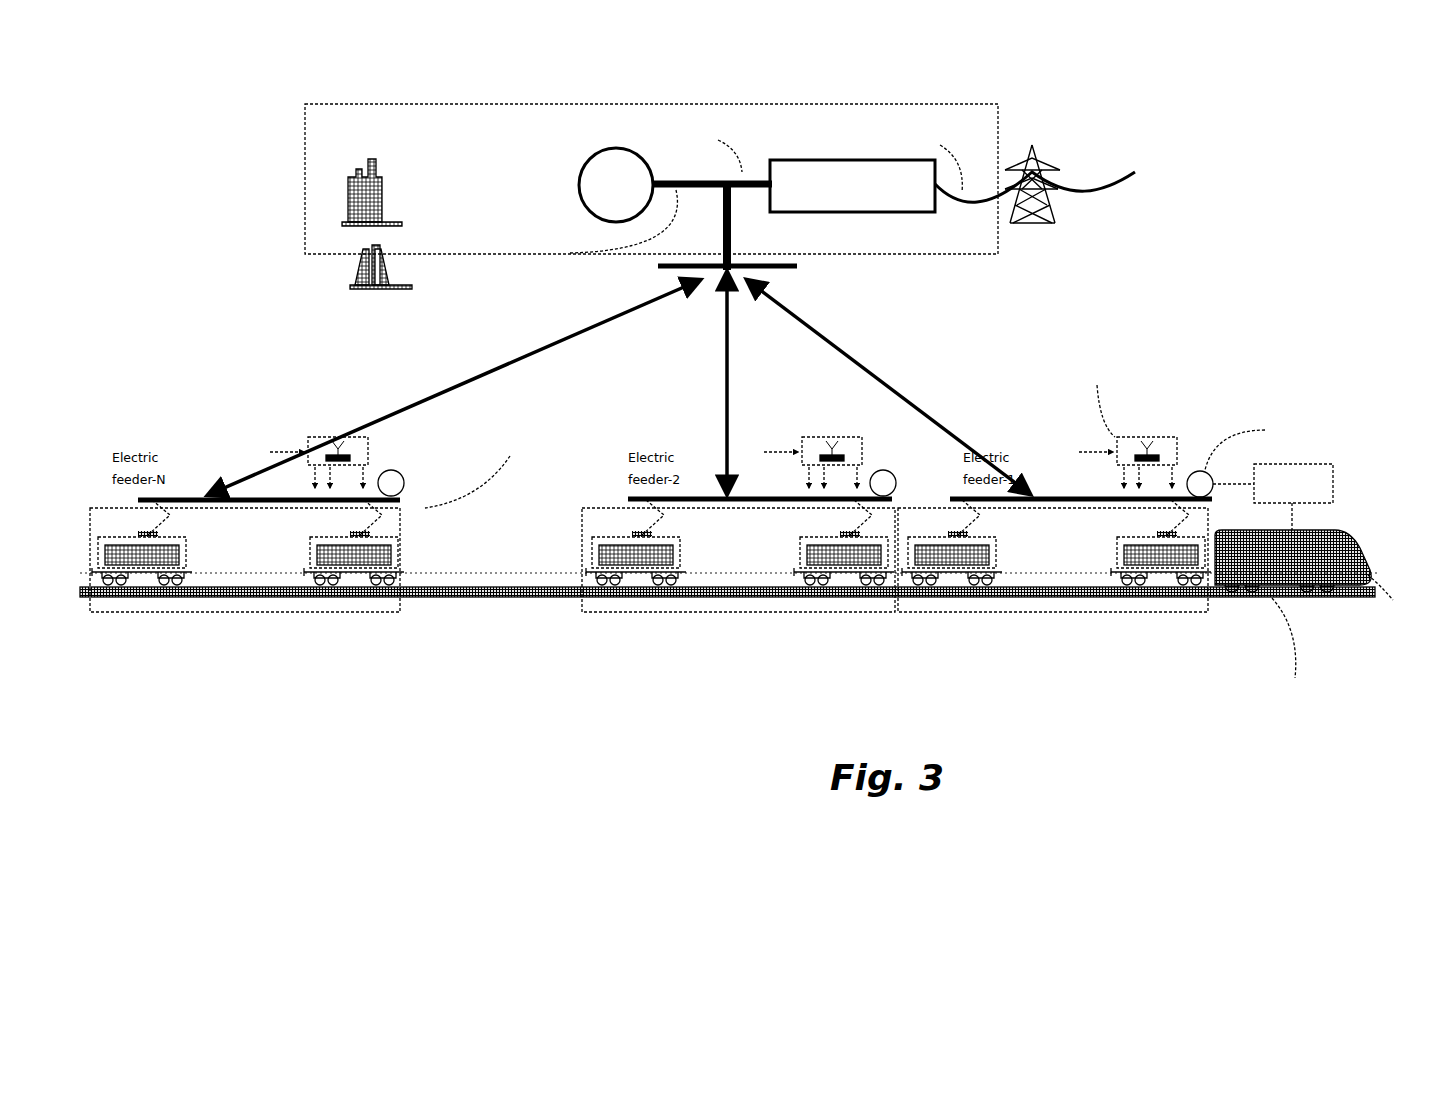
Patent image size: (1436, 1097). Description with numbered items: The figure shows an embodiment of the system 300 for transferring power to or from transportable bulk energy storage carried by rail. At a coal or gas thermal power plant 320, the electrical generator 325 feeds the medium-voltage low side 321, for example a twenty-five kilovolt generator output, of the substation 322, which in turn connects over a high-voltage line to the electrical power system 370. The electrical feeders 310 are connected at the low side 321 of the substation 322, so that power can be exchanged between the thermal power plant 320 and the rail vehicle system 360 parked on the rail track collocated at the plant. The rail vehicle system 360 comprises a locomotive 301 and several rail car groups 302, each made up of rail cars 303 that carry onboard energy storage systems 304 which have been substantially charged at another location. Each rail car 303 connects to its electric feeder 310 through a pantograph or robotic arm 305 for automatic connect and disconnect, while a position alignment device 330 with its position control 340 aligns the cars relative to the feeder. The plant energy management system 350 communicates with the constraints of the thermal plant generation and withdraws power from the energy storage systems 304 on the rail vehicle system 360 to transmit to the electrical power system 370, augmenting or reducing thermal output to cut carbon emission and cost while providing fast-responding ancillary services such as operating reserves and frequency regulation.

The system 300 is at (1210, 755).
The locomotive 301 is at (1317, 583).
The rail car group 302 is at (1140, 622).
The rail car 303 is at (1122, 558).
The onboard energy storage system 304 is at (363, 565).
The pantograph or robotic arm 305 is at (1190, 515).
The electrical feeder 310 is at (619, 383).
The thermal power plant 320 is at (651, 196).
The low side of substation 321 is at (725, 197).
The substation 322 is at (852, 198).
The electrical generator 325 is at (594, 183).
The position alignment device 330 is at (880, 442).
The position control 340 is at (1293, 497).
The plant energy management system 350 is at (774, 416).
The rail vehicle system 360 is at (1123, 680).
The electrical power system 370 is at (1114, 173).